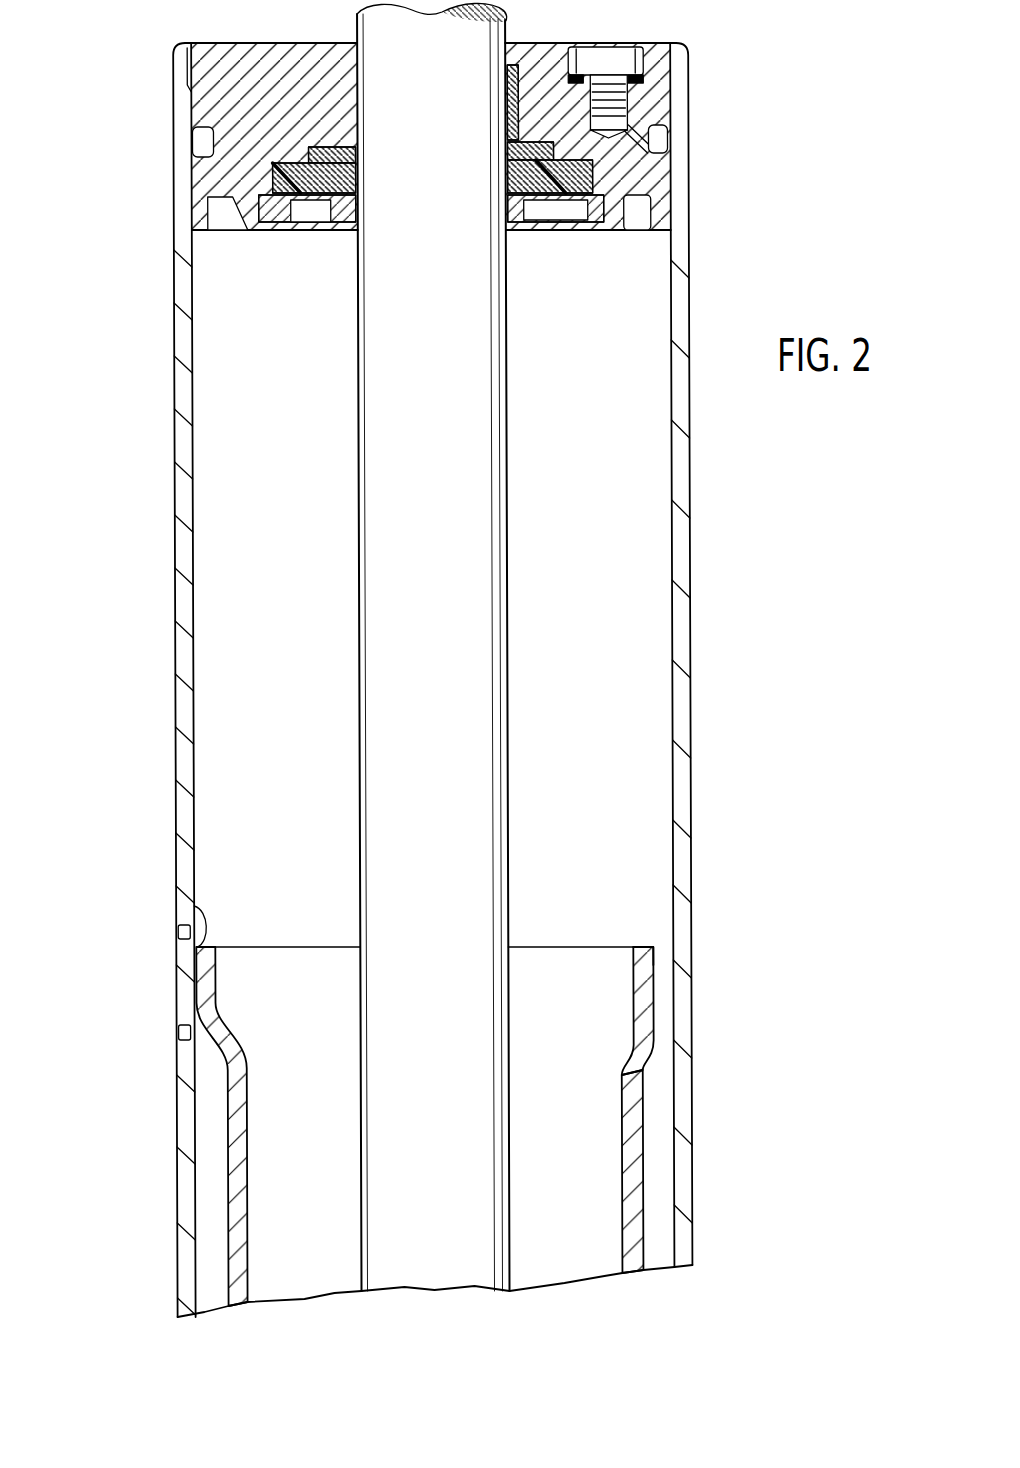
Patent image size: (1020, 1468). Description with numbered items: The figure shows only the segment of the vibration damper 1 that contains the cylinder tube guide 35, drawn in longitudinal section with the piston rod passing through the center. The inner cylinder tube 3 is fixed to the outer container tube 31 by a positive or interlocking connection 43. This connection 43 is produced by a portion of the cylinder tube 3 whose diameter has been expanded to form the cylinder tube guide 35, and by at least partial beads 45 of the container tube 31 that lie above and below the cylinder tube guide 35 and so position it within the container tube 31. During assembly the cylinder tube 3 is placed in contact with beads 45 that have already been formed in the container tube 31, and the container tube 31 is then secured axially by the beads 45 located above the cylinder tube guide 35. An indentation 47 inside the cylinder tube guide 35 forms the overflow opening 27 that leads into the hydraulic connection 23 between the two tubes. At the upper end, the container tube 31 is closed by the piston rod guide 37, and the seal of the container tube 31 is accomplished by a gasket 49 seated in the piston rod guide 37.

The vibration damper 1 is at (120, 628).
The cylinder tube 3 is at (240, 1150).
The hydraulic connection 23 is at (657, 1150).
The overflow opening 27 is at (663, 1000).
The container tube 31 is at (173, 396).
The cylinder tube guide 35 is at (290, 947).
The piston rod guide 37 is at (252, 163).
The positive or interlocking connection 43 is at (178, 908).
The beads 45 is at (178, 1037).
The indentation 47 is at (663, 953).
The gasket 49 is at (191, 138).